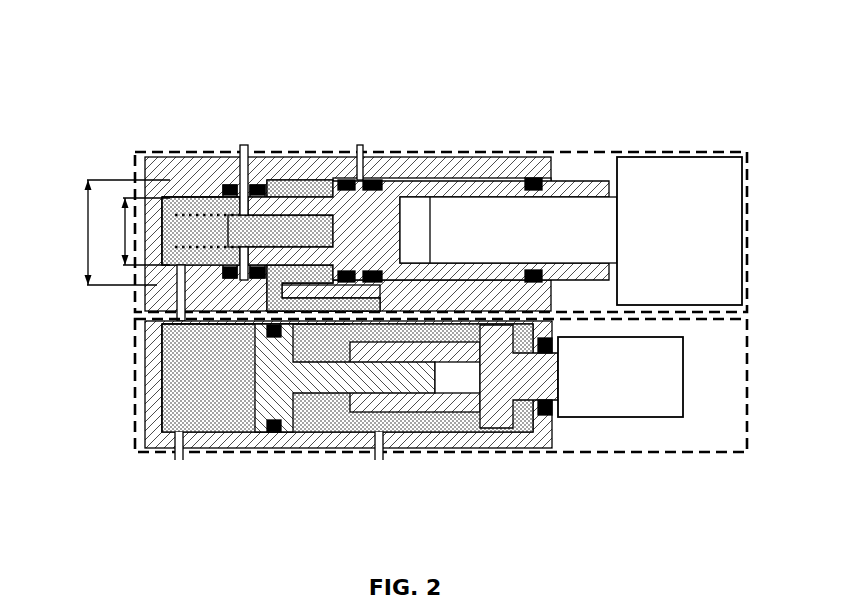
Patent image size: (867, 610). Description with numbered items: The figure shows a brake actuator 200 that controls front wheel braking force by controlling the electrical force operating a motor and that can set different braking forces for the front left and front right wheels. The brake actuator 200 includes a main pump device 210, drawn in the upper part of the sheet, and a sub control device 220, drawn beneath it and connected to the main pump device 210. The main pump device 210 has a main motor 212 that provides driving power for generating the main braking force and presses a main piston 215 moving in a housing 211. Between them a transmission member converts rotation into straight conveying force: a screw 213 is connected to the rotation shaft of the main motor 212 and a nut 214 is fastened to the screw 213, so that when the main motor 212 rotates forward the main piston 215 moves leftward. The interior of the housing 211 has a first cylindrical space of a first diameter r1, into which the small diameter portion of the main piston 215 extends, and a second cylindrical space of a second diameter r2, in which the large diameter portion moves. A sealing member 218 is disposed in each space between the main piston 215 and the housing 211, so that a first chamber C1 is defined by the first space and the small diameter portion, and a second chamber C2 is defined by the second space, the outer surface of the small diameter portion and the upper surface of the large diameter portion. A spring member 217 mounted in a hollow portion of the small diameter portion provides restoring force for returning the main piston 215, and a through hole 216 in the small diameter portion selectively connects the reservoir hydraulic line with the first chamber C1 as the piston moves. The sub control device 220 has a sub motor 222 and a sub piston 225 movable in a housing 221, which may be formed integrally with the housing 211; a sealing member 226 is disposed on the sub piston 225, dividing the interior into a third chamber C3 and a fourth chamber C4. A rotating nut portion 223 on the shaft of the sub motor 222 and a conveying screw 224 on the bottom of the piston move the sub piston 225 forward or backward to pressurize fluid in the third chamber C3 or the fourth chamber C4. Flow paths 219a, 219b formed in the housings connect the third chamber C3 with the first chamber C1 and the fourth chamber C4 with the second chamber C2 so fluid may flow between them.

The brake actuator 200 is at (581, 110).
The main pump device 210 is at (150, 150).
The housing 211 is at (296, 166).
The main motor 212 is at (663, 157).
The screw 213 is at (489, 218).
The nut 214 is at (423, 190).
The main piston 215 is at (283, 182).
The through hole 216 is at (248, 172).
The spring member 217 is at (170, 195).
The sealing member 218 is at (230, 185).
The flow path 219a is at (160, 297).
The flow path 219b is at (200, 325).
The sub control device 220 is at (148, 458).
The housing 221 is at (231, 437).
The sub motor 222 is at (630, 418).
The rotating nut portion 223 is at (502, 428).
The conveying screw 224 is at (346, 422).
The sub piston 225 is at (263, 377).
The sealing member 226 is at (277, 426).
The first chamber C1 is at (178, 200).
The second chamber C2 is at (316, 184).
The third chamber C3 is at (210, 418).
The fourth chamber C4 is at (315, 418).
The first diameter r1 is at (135, 231).
The second diameter r2 is at (116, 232).